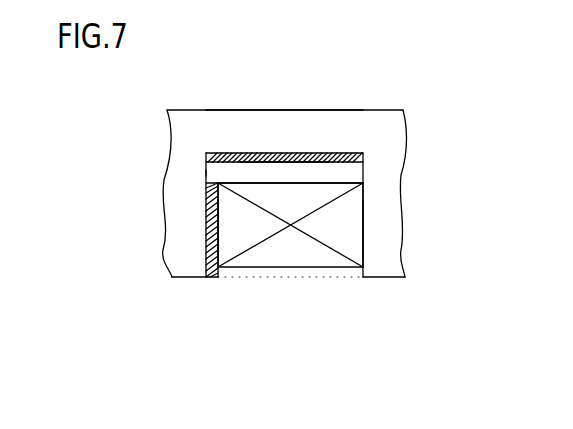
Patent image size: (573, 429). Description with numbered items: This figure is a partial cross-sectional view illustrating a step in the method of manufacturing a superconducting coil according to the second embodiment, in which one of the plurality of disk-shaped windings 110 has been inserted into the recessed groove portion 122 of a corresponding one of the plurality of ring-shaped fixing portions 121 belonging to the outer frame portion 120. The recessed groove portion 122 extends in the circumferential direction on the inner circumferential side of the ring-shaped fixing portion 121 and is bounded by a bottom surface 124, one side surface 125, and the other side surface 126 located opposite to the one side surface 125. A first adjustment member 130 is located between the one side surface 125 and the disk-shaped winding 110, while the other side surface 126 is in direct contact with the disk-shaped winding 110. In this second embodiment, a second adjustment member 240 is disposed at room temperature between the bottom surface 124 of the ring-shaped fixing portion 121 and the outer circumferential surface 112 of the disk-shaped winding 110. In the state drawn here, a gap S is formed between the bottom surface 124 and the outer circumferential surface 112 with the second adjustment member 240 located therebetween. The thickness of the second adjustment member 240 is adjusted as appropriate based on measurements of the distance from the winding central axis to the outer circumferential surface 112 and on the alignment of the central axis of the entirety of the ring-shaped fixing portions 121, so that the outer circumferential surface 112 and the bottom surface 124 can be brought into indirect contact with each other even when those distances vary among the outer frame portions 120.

The disk-shaped winding 110 is at (265, 263).
The outer circumferential surface 112 is at (245, 182).
The outer frame portion 120 is at (378, 110).
The ring-shaped fixing portion 121 is at (320, 138).
The recessed groove portion 122 is at (343, 277).
The bottom surface 124 is at (318, 160).
The one side surface 125 is at (224, 226).
The other side surface 126 is at (352, 227).
The first adjustment member 130 is at (214, 277).
The second adjustment member 240 is at (350, 153).
The gap S is at (232, 173).